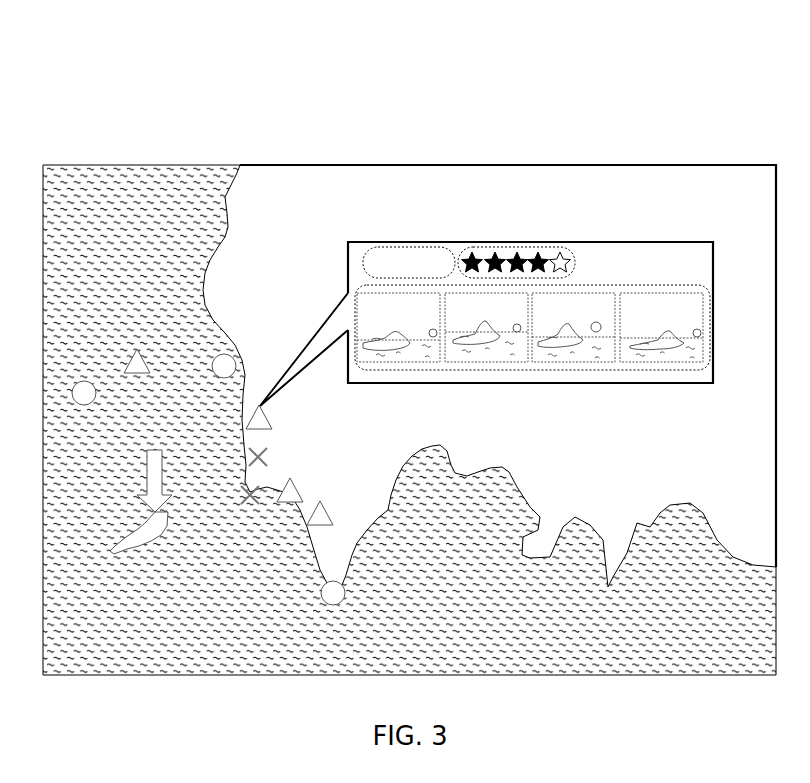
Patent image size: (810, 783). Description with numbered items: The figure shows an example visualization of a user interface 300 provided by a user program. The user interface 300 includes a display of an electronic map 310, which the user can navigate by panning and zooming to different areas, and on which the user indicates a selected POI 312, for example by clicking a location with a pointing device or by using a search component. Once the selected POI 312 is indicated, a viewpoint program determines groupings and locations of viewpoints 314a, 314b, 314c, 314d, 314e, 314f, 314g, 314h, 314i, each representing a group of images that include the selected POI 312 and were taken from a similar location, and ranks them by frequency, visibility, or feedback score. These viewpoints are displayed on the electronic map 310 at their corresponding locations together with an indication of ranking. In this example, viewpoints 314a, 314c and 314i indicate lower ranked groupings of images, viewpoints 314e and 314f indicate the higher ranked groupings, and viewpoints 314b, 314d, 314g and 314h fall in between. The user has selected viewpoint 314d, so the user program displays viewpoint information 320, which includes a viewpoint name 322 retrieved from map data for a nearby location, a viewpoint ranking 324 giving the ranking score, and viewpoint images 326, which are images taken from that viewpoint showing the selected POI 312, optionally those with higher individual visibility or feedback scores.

The user interface 300 is at (603, 122).
The electronic map 310 is at (105, 166).
The selected POI 312 is at (147, 477).
The viewpoint 314a is at (84, 381).
The viewpoint 314b is at (137, 353).
The viewpoint 314c is at (224, 354).
The viewpoint 314d is at (248, 418).
The viewpoint 314e is at (266, 450).
The viewpoint 314f is at (253, 502).
The viewpoint 314g is at (302, 489).
The viewpoint 314h is at (332, 514).
The viewpoint 314i is at (346, 594).
The viewpoint information 320 is at (486, 307).
The viewpoint name 322 is at (410, 246).
The viewpoint ranking 324 is at (517, 246).
The viewpoint images 326 is at (532, 384).